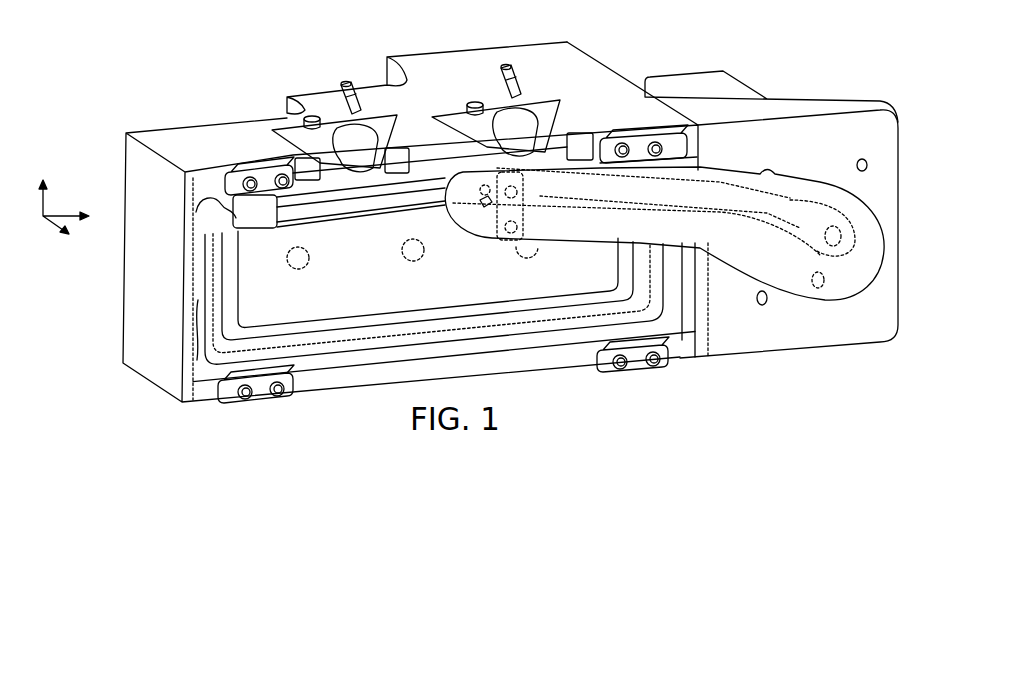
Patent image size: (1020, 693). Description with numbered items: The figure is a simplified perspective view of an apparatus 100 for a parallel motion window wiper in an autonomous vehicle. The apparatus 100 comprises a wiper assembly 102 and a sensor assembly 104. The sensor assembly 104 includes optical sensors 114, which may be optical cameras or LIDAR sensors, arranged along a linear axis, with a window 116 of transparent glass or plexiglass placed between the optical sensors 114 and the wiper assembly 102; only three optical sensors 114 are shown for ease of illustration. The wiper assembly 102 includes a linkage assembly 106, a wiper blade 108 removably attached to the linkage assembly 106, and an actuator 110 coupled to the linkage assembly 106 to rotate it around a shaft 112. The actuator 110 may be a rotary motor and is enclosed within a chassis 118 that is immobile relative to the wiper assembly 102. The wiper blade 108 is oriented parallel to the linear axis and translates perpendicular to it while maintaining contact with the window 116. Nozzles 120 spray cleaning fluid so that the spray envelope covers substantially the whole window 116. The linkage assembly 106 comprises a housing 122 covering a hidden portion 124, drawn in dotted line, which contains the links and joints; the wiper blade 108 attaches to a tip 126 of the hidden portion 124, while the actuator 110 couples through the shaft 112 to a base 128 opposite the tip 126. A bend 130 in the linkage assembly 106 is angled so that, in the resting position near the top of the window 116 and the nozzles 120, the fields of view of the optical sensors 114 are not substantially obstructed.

The apparatus 100 is at (47, 40).
The wiper assembly 102 is at (739, 178).
The sensor assembly 104 is at (210, 118).
The linkage assembly 106 is at (727, 233).
The wiper blade 108 is at (290, 222).
The actuator 110 is at (723, 70).
The shaft 112 is at (836, 232).
The optical sensors 114 is at (542, 276).
The window 116 is at (567, 340).
The chassis 118 is at (882, 117).
The nozzles 120 is at (500, 77).
The housing 122 is at (709, 300).
The hidden portion 124 is at (500, 240).
The tip 126 is at (486, 193).
The base 128 is at (819, 285).
The bend 130 is at (650, 165).